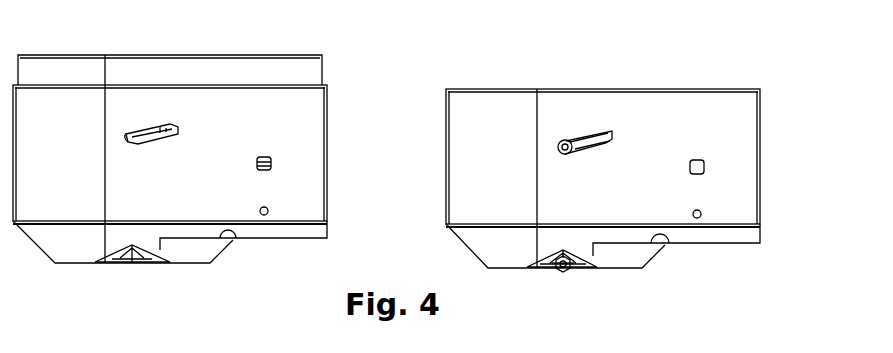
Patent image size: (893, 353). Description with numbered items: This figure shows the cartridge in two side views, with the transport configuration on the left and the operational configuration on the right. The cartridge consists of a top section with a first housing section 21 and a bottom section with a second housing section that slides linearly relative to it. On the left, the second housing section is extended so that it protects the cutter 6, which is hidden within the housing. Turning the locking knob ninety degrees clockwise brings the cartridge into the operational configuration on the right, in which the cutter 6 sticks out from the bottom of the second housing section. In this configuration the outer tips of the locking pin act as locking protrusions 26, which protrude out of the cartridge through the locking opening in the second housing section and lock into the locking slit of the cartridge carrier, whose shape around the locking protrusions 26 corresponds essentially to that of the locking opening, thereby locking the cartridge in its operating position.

The first housing section 21 is at (315, 72).
The locking protrusions 26 is at (558, 147).
The cutter 6 is at (565, 273).